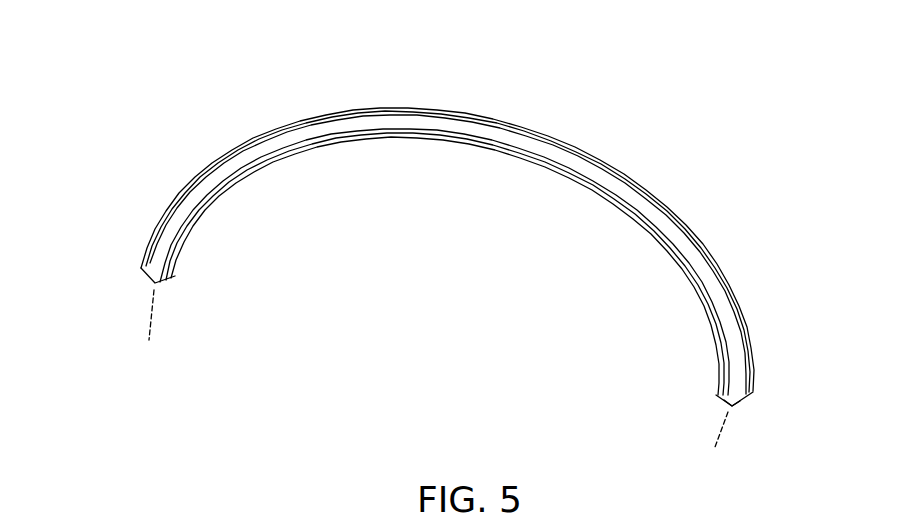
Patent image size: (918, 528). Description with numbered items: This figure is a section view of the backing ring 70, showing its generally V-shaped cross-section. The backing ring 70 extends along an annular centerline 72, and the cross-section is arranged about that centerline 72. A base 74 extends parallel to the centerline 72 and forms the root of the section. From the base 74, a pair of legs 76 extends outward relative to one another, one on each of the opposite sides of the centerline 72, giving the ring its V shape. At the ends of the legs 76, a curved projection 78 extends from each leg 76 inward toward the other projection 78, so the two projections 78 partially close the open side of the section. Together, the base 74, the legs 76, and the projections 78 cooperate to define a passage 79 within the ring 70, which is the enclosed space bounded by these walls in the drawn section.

The backing ring 70 is at (147, 194).
The annular centerline 72 is at (712, 446).
The base 74 is at (738, 409).
The legs 76 is at (714, 393).
The curved projection 78 is at (714, 370).
The passage 79 is at (736, 347).